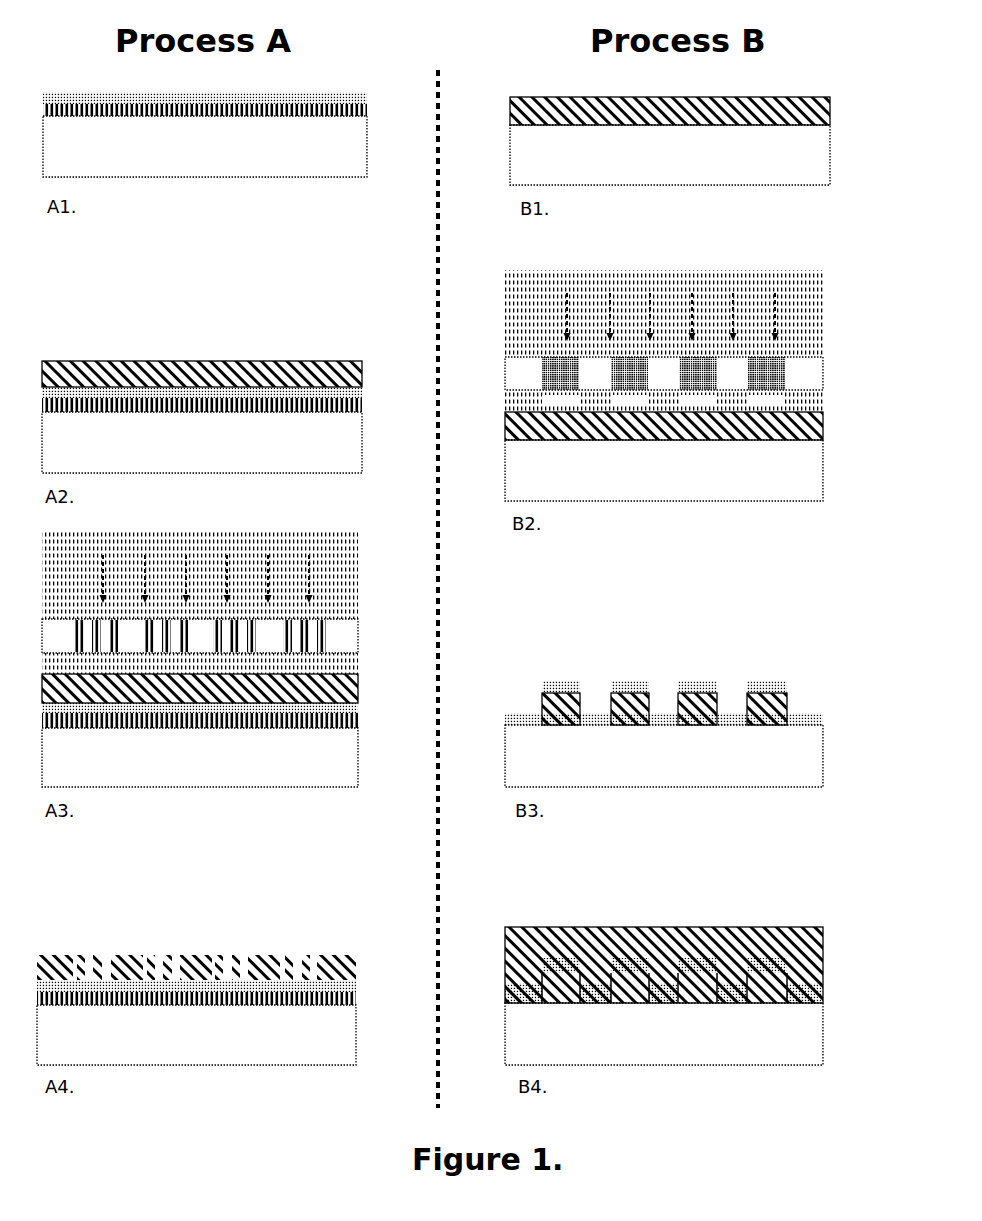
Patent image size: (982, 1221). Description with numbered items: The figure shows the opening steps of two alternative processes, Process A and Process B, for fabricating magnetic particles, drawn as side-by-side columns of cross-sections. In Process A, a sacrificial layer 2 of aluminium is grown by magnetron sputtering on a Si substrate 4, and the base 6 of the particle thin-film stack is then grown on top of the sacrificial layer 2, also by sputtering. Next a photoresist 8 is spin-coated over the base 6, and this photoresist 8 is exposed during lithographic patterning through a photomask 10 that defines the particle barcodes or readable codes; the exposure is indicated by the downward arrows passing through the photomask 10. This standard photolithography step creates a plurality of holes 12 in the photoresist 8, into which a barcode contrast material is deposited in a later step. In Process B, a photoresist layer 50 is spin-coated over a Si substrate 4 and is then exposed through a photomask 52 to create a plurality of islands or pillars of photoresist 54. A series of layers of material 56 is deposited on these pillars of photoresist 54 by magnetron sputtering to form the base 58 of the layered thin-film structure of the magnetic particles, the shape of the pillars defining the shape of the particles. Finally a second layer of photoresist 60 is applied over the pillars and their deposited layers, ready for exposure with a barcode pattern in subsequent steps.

The sacrificial layer 2 is at (360, 112).
The Si substrate 4 is at (360, 147).
The base of the particle thin-film stack 6 is at (350, 96).
The photoresist 8 is at (290, 366).
The photomask 10 is at (350, 636).
The holes 12 is at (311, 960).
The photoresist layer 50 is at (806, 100).
The photomask 52 is at (815, 381).
The islands or pillars of photoresist 54 is at (810, 428).
The layers of material 56 is at (558, 686).
The base of the layered thin-film structure 58 is at (540, 674).
The second layer of photoresist 60 is at (512, 936).